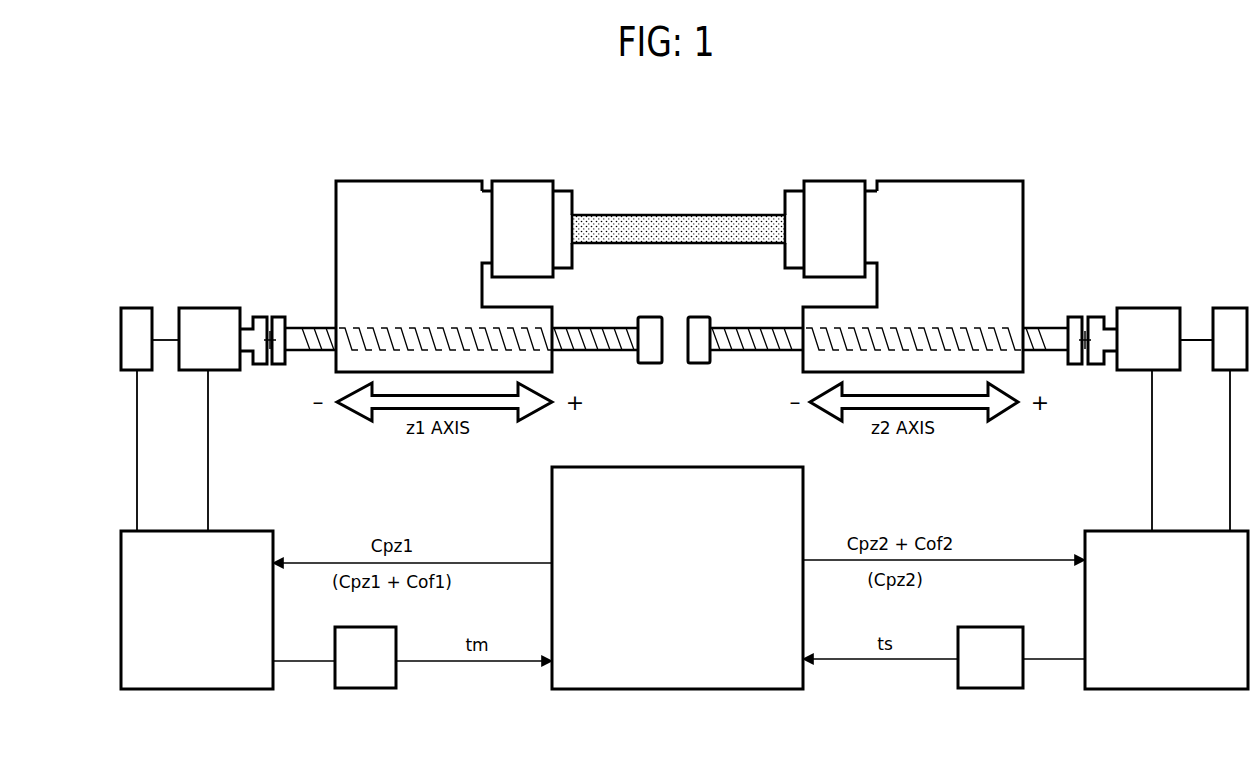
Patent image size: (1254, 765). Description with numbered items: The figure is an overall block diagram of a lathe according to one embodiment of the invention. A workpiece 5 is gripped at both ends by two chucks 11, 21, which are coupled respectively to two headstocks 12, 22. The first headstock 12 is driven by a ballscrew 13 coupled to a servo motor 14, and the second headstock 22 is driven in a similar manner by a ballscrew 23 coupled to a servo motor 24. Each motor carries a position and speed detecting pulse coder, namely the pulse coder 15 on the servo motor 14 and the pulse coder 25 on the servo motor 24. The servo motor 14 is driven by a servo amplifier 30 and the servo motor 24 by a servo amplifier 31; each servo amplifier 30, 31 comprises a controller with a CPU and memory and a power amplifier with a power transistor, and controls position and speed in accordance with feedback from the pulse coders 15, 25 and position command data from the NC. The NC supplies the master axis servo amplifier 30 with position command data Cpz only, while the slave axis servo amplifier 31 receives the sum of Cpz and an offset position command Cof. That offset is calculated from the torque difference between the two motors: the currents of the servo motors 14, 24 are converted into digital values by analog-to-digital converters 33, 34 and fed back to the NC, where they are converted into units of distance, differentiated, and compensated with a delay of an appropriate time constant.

The workpiece 5 is at (681, 213).
The chuck 11 is at (529, 181).
The headstock 12 is at (420, 181).
The ballscrew 13 is at (598, 328).
The servo motor 14 is at (208, 308).
The position and speed detecting pulse coder 15 is at (135, 308).
The chuck 21 is at (831, 181).
The headstock 22 is at (978, 181).
The ballscrew 23 is at (748, 328).
The servo motor 24 is at (1140, 307).
The position and speed detecting pulse coder 25 is at (1228, 307).
The servo amplifier 30 is at (242, 531).
The servo amplifier 31 is at (1102, 531).
The analog-to-digital converter 33 is at (396, 629).
The analog-to-digital converter 34 is at (663, 467).